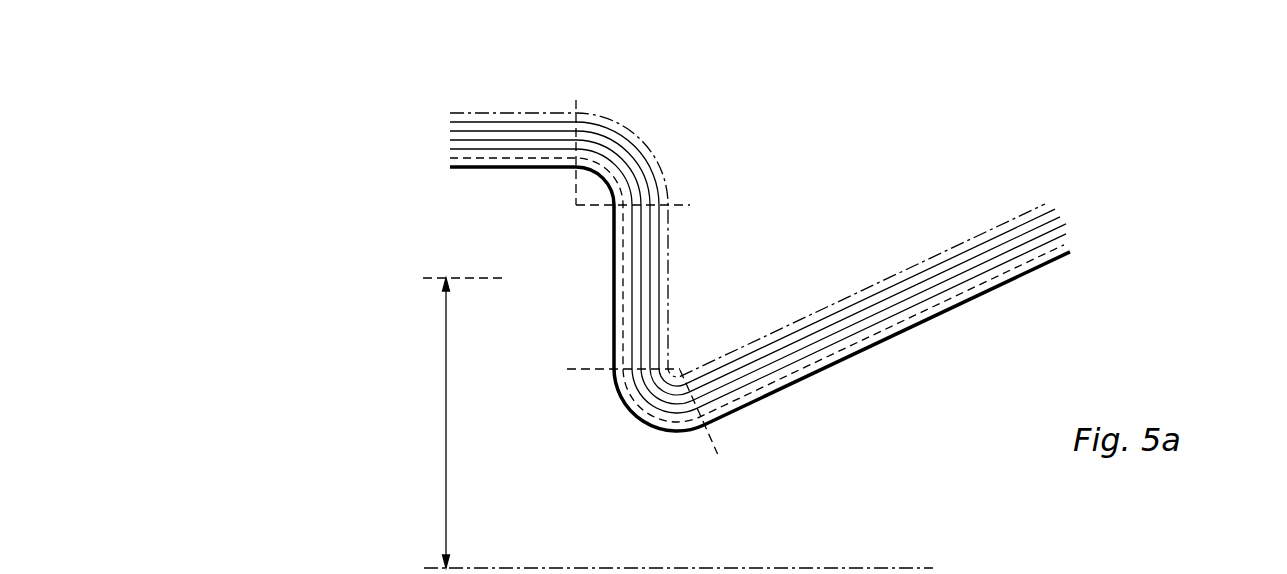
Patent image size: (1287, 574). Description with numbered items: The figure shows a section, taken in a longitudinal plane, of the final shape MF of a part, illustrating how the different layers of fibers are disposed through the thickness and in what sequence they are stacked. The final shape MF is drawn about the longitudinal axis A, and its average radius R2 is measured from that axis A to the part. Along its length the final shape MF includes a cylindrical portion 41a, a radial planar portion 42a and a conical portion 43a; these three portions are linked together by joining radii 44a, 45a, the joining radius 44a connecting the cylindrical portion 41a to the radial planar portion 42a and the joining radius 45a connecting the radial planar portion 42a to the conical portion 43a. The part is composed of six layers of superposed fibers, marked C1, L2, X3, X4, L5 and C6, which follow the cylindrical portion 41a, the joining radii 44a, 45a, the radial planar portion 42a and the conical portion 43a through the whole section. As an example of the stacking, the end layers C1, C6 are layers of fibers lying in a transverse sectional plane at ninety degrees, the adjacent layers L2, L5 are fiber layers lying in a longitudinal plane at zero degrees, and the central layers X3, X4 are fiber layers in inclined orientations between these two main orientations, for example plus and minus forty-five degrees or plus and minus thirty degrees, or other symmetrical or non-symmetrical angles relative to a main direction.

The cylindrical portion 41a is at (514, 171).
The radial planar portion 42a is at (599, 286).
The conical portion 43a is at (912, 383).
The joining radius 44a is at (647, 135).
The joining radius 45a is at (637, 434).
The end layer C6 is at (1045, 204).
The adjacent layer L5 is at (1055, 209).
The central layer X4 is at (1060, 217).
The central layer X3 is at (1066, 224).
The adjacent layer L2 is at (1066, 234).
The end layer C1 is at (1064, 245).
The average radius R2 is at (450, 423).
The longitudinal axis A is at (866, 568).
The final shape MF is at (1188, 266).